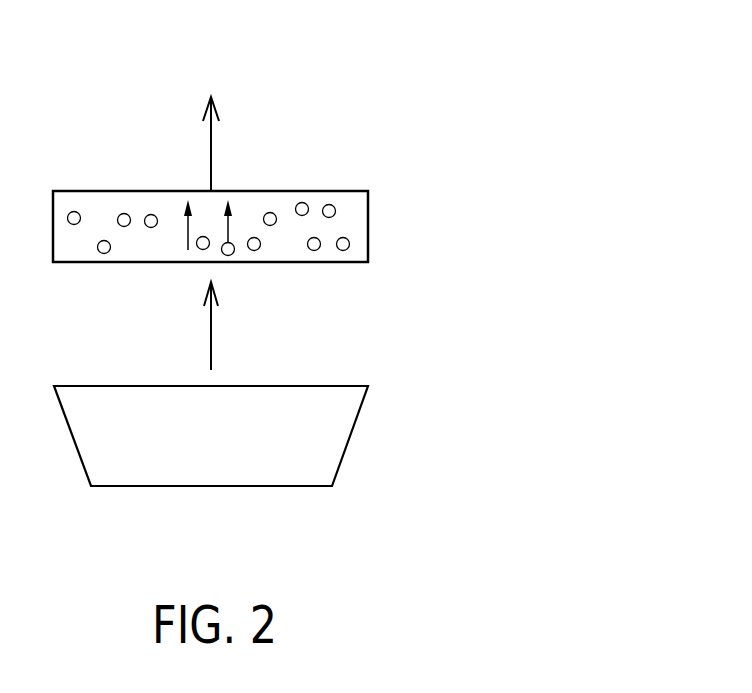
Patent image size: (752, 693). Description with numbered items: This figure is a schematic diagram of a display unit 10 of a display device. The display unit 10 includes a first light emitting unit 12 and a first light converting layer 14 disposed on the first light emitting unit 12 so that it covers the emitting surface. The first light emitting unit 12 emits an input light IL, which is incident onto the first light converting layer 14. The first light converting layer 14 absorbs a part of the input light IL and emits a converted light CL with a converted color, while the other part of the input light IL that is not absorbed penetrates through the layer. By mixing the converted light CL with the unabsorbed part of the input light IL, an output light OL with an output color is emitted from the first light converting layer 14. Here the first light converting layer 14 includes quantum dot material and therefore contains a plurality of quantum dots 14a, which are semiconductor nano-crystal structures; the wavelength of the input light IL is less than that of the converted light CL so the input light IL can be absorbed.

The display unit 10 is at (467, 69).
The first light emitting unit 12 is at (353, 386).
The first light converting layer 14 is at (353, 191).
The quantum dots 14a is at (343, 251).
The input light IL is at (150, 172).
The converted light CL is at (229, 233).
The output light OL is at (211, 125).